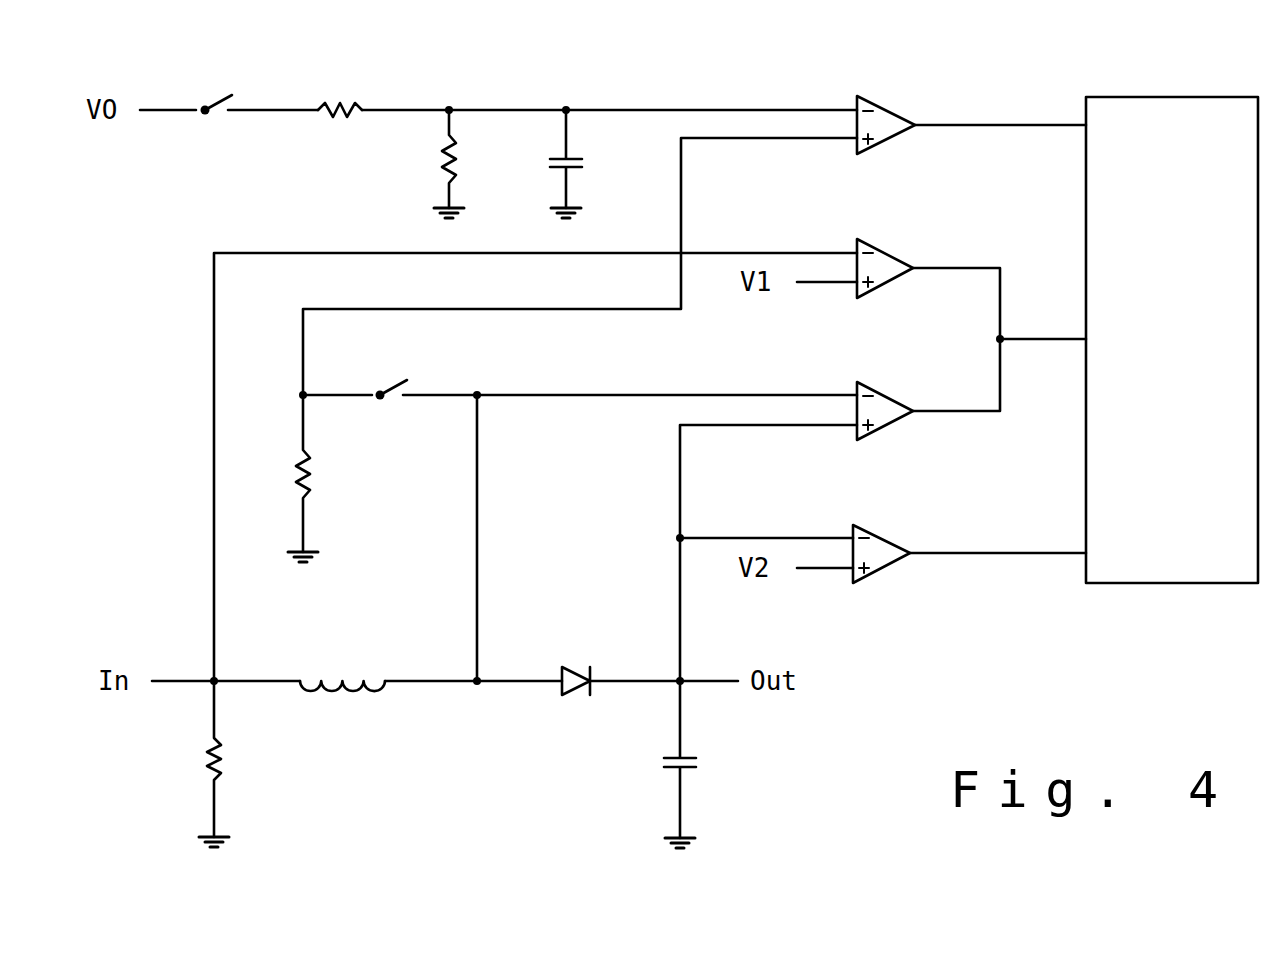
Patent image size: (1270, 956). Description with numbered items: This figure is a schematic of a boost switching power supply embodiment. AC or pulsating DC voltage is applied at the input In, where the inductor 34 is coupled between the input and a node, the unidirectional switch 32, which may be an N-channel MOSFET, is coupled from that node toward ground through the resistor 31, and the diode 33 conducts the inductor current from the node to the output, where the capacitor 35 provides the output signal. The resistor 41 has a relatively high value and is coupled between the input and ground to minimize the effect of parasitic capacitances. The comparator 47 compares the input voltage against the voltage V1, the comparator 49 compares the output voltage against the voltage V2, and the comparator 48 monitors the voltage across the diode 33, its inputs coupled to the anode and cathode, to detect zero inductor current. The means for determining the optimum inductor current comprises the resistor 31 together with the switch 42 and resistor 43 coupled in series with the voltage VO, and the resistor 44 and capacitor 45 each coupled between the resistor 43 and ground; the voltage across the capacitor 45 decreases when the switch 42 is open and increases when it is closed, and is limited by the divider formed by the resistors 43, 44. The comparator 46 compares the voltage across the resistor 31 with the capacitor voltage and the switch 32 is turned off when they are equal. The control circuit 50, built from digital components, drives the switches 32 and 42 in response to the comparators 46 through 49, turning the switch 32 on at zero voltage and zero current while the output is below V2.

The resistor 31 is at (306, 494).
The unidirectional switch 32 is at (372, 401).
The diode 33 is at (566, 694).
The inductor 34 is at (380, 688).
The capacitor 35 is at (694, 768).
The resistor 41 is at (216, 778).
The switch 42 is at (196, 117).
The resistor 43 is at (324, 117).
The resistor 44 is at (442, 178).
The capacitor 45 is at (582, 167).
The comparator 46 is at (886, 113).
The comparator 47 is at (885, 255).
The comparator 48 is at (885, 398).
The comparator 49 is at (882, 540).
The control circuit 50 is at (1152, 583).